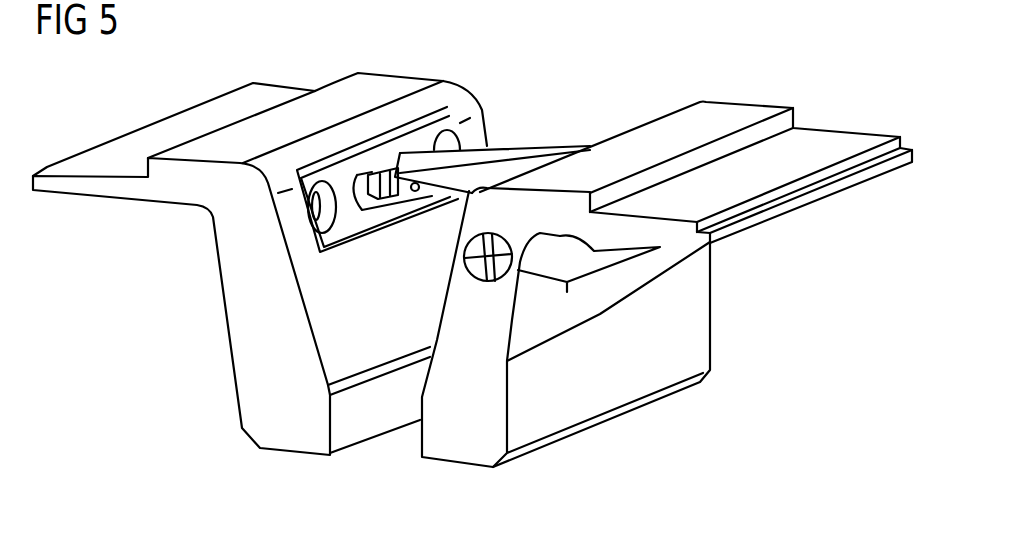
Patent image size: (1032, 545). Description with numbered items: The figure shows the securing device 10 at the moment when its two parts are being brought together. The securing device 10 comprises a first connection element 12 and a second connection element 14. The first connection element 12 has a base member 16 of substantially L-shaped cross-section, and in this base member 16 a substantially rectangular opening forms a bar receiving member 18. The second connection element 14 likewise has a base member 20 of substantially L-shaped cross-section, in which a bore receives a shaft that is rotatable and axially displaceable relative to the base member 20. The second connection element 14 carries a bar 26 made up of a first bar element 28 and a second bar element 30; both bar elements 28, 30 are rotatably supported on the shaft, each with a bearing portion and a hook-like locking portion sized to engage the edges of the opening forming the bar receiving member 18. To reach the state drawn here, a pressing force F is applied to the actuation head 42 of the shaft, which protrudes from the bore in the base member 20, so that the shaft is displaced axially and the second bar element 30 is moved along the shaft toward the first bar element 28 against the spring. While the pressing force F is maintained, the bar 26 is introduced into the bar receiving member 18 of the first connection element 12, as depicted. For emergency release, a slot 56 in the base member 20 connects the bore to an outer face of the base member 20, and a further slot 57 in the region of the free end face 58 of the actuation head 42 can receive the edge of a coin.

The securing device 10 is at (756, 62).
The first connection element 12 is at (378, 88).
The second connection element 14 is at (828, 140).
The base member 16 is at (237, 293).
The bar receiving member 18 is at (363, 196).
The base member 20 is at (430, 438).
The bar 26 is at (504, 138).
The first bar element 28 is at (533, 160).
The second bar element 30 is at (457, 196).
The actuation head 42 is at (520, 245).
The slot 56 is at (550, 266).
The slot 57 is at (485, 278).
The free end face 58 is at (462, 260).
The pressing force F is at (450, 271).